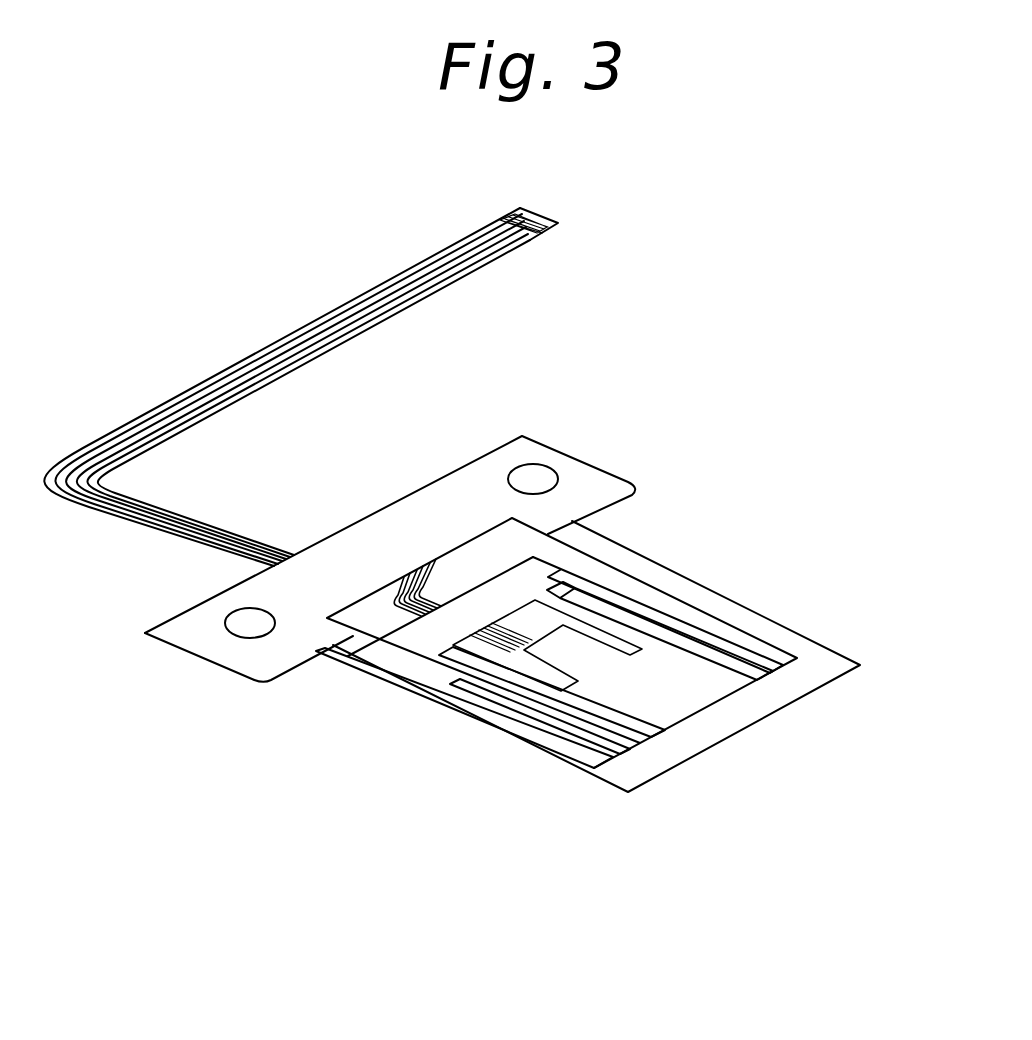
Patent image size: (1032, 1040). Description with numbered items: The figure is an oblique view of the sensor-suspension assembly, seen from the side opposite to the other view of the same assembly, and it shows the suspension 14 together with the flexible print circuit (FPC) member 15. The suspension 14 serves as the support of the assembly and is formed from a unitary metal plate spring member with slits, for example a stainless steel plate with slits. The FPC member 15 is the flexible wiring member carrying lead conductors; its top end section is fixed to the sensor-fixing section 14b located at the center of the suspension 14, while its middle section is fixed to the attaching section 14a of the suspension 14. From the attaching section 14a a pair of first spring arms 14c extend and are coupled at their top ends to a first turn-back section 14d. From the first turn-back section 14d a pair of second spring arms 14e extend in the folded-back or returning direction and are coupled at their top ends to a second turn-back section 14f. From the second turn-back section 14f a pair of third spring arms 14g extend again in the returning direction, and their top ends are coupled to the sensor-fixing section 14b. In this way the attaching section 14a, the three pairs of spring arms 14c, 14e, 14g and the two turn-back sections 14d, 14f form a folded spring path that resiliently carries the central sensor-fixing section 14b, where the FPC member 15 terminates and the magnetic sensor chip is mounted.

The suspension 14 is at (705, 429).
The attaching section 14a is at (447, 498).
The sensor-fixing section 14b is at (628, 683).
The first spring arms 14c is at (698, 596).
The first turn-back section 14d is at (757, 710).
The second spring arms 14e is at (745, 650).
The second turn-back section 14f is at (412, 632).
The third spring arms 14g is at (572, 608).
The flexible print circuit (FPC) member 15 is at (287, 350).